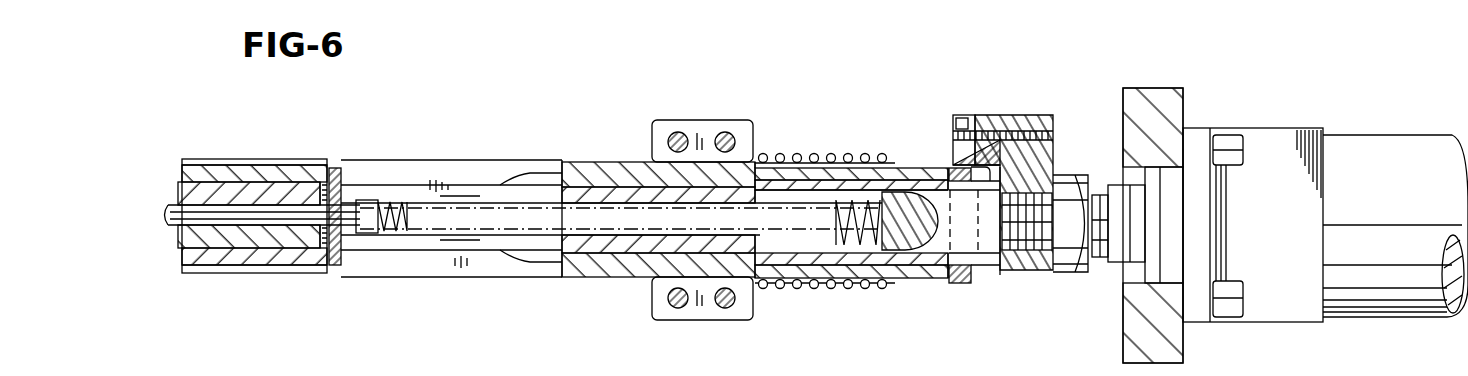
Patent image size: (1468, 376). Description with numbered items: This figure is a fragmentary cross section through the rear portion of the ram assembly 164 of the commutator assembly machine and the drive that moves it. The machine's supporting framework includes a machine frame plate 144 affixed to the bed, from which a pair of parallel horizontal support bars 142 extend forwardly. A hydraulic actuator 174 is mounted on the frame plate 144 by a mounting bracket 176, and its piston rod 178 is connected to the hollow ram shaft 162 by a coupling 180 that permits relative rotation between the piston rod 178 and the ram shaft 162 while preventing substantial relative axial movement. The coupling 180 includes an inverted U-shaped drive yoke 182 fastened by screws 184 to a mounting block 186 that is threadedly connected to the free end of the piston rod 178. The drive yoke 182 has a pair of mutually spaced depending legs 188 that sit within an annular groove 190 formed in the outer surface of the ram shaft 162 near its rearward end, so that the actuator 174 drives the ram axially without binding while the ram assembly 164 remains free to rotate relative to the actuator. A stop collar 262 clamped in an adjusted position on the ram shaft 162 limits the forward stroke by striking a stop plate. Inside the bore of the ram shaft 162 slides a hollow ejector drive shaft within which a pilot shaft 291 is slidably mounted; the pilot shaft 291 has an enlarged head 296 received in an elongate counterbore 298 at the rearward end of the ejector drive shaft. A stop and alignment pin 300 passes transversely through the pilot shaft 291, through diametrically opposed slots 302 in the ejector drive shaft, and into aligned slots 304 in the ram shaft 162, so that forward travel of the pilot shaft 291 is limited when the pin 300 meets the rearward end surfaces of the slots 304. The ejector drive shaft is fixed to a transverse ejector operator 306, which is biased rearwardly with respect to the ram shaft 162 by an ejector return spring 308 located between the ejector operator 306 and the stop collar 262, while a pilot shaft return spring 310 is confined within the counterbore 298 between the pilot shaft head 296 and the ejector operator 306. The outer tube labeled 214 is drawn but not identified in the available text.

The support bars 142 is at (1100, 268).
The machine frame plate 144 is at (1124, 337).
The ram shaft 162 is at (580, 162).
The ram assembly 164 is at (541, 160).
The hydraulic actuator 174 is at (1376, 146).
The mounting bracket 176 is at (1210, 138).
The piston rod 178 is at (1135, 208).
The coupling 180 is at (1030, 114).
The drive yoke 182 is at (953, 158).
The screws 184 is at (964, 120).
The mounting block 186 is at (1048, 162).
The depending legs 188 is at (975, 278).
The annular groove 190 is at (953, 286).
The outer tube 214 is at (262, 158).
The stop collar 262 is at (710, 120).
The pilot shaft 291 is at (257, 226).
The enlarged head 296 is at (366, 200).
The counterbore 298 is at (432, 225).
The stop and alignment pin 300 is at (336, 166).
The slots 302 is at (490, 192).
The slots 304 is at (428, 176).
The transverse ejector operator 306 is at (897, 240).
The ejector return spring 308 is at (798, 156).
The pilot shaft return spring 310 is at (846, 203).